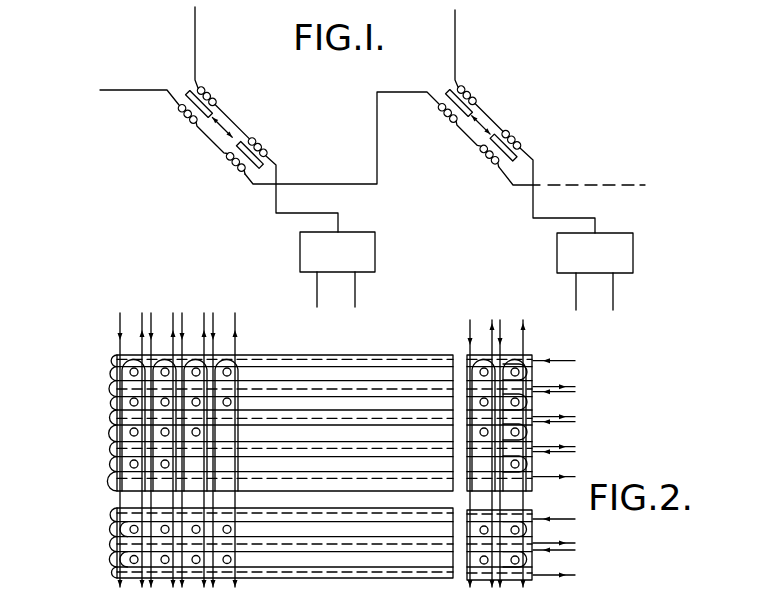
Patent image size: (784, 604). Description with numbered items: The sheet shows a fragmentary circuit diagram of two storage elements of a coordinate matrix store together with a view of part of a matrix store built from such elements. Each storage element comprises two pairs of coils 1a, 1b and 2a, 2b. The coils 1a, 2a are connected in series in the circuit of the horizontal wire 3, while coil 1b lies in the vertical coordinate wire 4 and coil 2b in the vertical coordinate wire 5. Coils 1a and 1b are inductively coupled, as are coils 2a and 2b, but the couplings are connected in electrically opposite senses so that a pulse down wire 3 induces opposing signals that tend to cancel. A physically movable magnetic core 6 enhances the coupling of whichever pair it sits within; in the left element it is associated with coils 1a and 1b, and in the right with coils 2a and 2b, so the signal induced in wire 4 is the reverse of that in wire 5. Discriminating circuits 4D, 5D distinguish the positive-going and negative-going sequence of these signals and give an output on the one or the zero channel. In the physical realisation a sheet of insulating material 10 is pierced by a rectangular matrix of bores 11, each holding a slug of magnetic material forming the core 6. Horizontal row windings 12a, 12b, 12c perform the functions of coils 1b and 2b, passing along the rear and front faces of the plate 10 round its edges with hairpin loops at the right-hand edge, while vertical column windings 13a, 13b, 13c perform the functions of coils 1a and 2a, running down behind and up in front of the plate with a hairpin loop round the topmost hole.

In FIG. 1, the coil 1a is at (187, 123).
In FIG. 1, the coil 1b is at (212, 88).
In FIG. 1, the coil 2a is at (242, 170).
In FIG. 1, the coil 2b is at (263, 135).
In FIG. 1, the wire 3 is at (130, 90).
In FIG. 1, the vertical coordinate wire 4 is at (196, 25).
In FIG. 1, the vertical coordinate wire 5 is at (456, 28).
In FIG. 1, the magnetic core 6 is at (222, 113).
In FIG. 1, the discriminating circuit 4D is at (340, 269).
In FIG. 1, the discriminating circuit 5D is at (600, 272).
In FIG. 2, the sheet of insulating material 10 is at (342, 355).
In FIG. 2, the bores 11 is at (130, 463).
In FIG. 2, the horizontal row winding 12a is at (560, 386).
In FIG. 2, the horizontal row winding 12b is at (560, 416).
In FIG. 2, the horizontal row winding 12c is at (560, 446).
In FIG. 2, the vertical column winding 13a is at (120, 318).
In FIG. 2, the vertical column winding 13b is at (151, 318).
In FIG. 2, the vertical column winding 13c is at (182, 318).